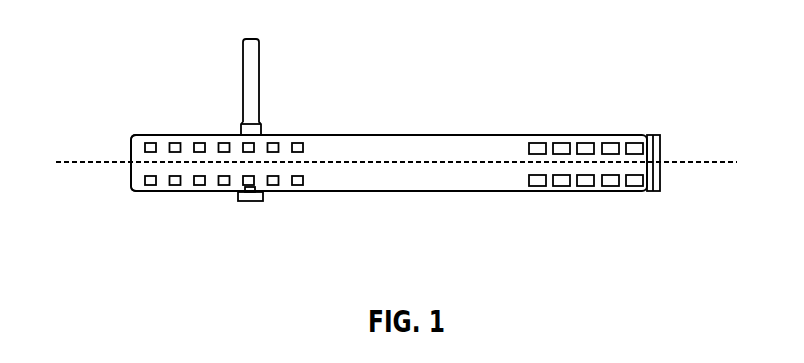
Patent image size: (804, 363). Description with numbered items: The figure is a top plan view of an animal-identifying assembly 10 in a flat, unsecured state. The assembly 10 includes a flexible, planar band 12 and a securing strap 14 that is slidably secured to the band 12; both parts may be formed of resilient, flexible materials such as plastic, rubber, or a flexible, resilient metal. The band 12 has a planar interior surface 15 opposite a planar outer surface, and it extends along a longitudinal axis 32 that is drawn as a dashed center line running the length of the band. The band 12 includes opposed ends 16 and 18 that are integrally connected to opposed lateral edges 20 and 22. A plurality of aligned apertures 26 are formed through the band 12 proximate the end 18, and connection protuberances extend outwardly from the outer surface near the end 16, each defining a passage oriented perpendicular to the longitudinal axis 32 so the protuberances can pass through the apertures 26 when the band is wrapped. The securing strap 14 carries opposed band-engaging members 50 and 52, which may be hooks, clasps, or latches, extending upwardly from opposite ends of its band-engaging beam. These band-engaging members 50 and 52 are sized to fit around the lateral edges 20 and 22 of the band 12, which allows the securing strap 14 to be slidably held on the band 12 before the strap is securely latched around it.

The animal-identifying assembly 10 is at (174, 36).
The band 12 is at (450, 200).
The securing strap 14 is at (268, 84).
The interior surface 15 is at (452, 142).
The end 16 is at (131, 140).
The end 18 is at (660, 177).
The lateral edge 20 is at (344, 134).
The lateral edge 22 is at (357, 192).
The apertures 26 is at (634, 142).
The longitudinal axis 32 is at (507, 160).
The band-engaging member 50 is at (241, 128).
The band-engaging member 52 is at (245, 202).